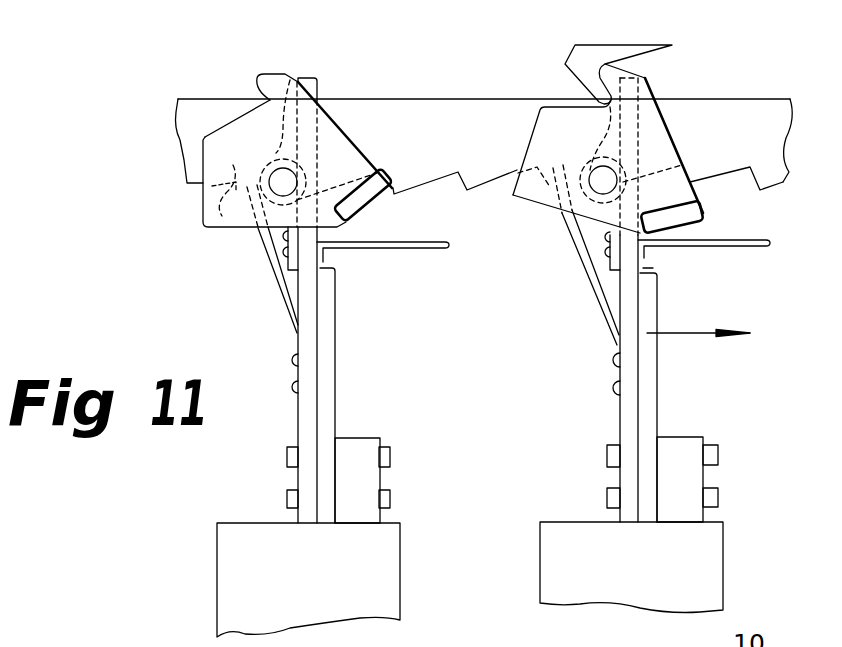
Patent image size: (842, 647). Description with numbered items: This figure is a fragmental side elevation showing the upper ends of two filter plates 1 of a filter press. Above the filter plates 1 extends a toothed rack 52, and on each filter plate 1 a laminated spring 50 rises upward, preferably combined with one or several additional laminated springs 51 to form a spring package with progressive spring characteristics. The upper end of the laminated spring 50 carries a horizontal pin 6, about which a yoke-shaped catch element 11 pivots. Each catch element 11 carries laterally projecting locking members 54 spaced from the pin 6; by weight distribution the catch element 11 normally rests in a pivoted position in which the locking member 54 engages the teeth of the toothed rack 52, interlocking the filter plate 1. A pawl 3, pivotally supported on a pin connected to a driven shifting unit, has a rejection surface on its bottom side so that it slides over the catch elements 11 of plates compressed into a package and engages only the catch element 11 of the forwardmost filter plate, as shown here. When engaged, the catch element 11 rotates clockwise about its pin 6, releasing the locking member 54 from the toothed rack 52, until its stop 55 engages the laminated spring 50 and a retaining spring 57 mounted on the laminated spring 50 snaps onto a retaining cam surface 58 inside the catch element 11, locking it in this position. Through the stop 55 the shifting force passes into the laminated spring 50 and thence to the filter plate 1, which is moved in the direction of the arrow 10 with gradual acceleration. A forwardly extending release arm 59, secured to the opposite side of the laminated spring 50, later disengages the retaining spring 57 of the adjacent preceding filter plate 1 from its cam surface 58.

The filter plate 1 is at (400, 553).
The pawl 3 is at (597, 48).
The pin 6 is at (277, 170).
The arrow 10 is at (687, 333).
The catch element 11 is at (268, 72).
The laminated spring 50 is at (288, 436).
The additional laminated spring 51 is at (336, 402).
The toothed rack 52 is at (230, 98).
The locking member 54 is at (383, 197).
The stop 55 is at (300, 75).
The retaining spring 57 is at (272, 273).
The retaining cam surface 58 is at (236, 182).
The release arm 59 is at (402, 248).